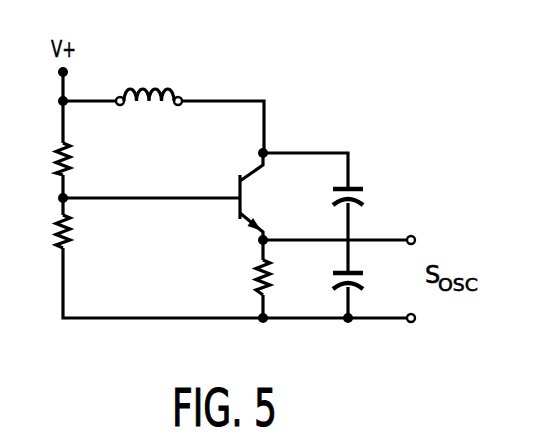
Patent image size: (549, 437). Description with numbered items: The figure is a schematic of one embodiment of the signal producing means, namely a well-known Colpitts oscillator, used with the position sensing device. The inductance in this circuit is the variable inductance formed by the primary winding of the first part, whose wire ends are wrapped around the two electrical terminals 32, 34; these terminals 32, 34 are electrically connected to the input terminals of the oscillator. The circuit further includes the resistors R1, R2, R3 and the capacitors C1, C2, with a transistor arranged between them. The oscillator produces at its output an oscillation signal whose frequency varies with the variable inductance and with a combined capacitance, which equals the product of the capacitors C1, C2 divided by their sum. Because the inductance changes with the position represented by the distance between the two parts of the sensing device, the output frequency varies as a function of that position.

The electrical terminal 32 is at (182, 97).
The electrical terminal 34 is at (116, 98).
The resistor R1 is at (47, 160).
The resistor R2 is at (47, 231).
The resistor R3 is at (247, 277).
The capacitor C1 is at (365, 195).
The capacitor C2 is at (365, 284).